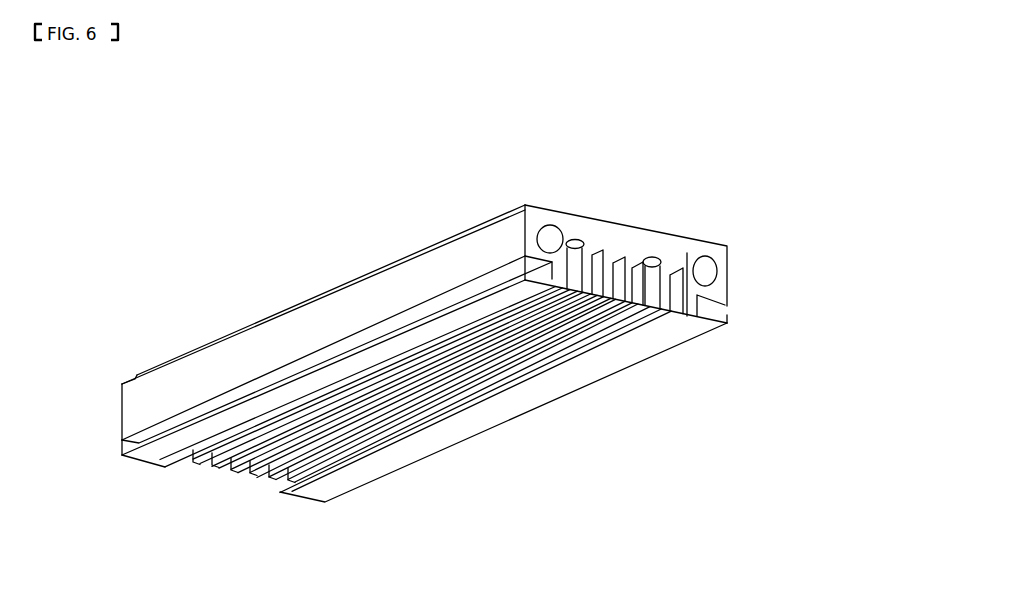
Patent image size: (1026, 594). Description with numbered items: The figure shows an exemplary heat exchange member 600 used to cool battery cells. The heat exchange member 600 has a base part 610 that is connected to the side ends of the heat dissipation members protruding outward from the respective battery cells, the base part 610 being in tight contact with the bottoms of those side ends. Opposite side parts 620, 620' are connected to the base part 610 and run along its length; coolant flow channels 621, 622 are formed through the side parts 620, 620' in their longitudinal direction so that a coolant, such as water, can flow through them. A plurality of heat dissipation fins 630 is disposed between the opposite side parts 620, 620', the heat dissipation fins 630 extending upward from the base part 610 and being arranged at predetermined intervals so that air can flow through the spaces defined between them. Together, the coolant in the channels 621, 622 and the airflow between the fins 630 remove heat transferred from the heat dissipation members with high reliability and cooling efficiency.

The heat exchange member 600 is at (75, 143).
The base part 610 is at (344, 282).
The side part 620 is at (296, 391).
The side part 620' is at (461, 438).
The coolant flow channel 621 is at (700, 269).
The coolant flow channel 622 is at (538, 246).
The heat dissipation fins 630 is at (520, 378).